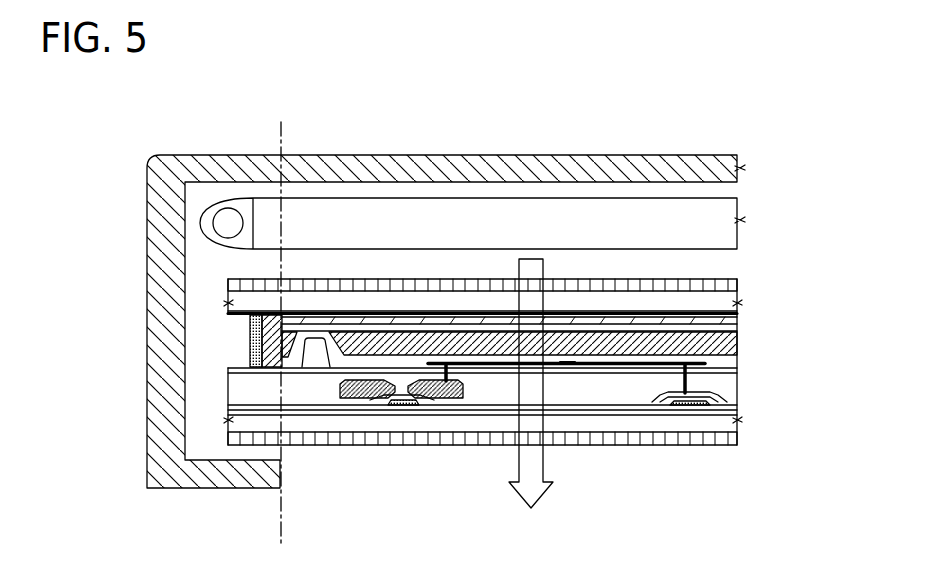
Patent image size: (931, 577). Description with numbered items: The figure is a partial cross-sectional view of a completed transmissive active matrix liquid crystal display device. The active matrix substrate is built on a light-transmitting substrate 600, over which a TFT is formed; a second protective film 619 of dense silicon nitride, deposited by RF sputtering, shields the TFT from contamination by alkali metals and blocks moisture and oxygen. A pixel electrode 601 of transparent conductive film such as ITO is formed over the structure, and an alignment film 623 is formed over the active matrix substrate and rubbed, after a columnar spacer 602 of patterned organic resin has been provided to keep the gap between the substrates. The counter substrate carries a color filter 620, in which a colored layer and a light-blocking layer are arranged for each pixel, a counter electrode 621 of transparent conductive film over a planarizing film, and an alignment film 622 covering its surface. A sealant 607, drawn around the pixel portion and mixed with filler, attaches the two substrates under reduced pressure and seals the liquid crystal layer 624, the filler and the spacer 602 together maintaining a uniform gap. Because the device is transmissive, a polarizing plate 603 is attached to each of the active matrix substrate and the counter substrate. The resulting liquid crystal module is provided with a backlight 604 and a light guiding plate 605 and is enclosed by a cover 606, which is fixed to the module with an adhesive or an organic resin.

The substrate 600 is at (742, 441).
The pixel electrode 601 is at (546, 367).
The columnar spacer 602 is at (320, 358).
The polarizing plate 603 is at (587, 288).
The backlight 604 is at (227, 221).
The light guiding plate 605 is at (486, 213).
The cover 606 is at (337, 173).
The sealant 607 is at (254, 353).
The second protective film 619 is at (567, 367).
The color filter 620 is at (742, 306).
The counter electrode 621 is at (742, 323).
The alignment film 622 is at (742, 343).
The alignment film 623 is at (742, 392).
The liquid crystal layer 624 is at (745, 373).
The thin film transistor TFT is at (463, 448).